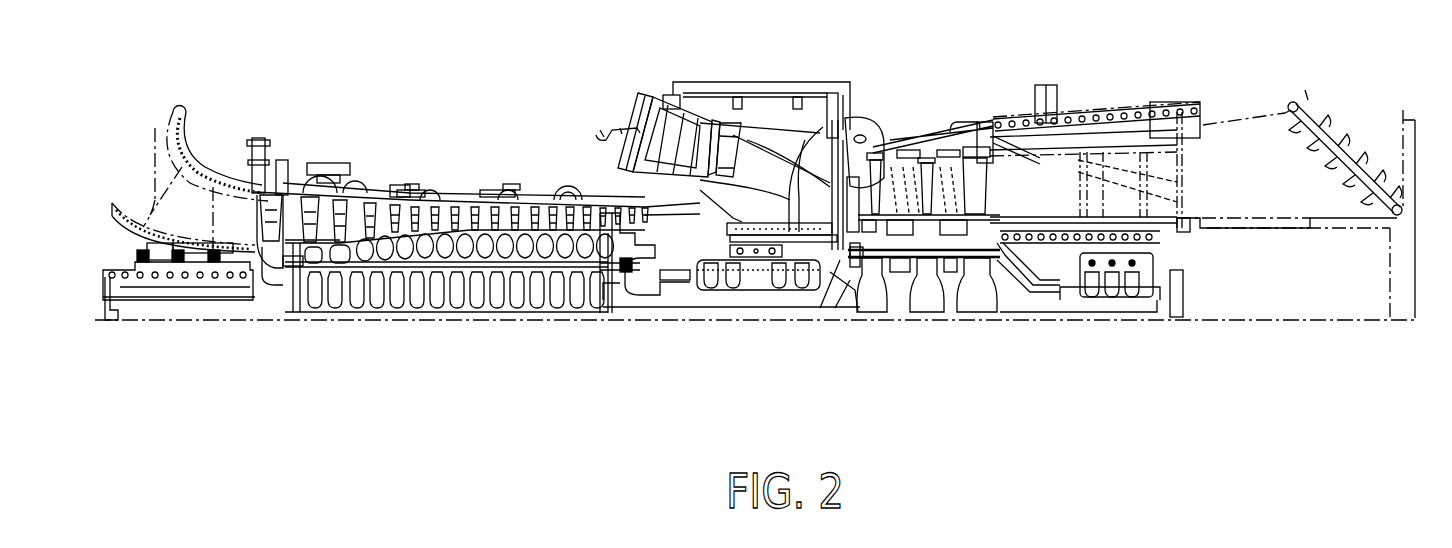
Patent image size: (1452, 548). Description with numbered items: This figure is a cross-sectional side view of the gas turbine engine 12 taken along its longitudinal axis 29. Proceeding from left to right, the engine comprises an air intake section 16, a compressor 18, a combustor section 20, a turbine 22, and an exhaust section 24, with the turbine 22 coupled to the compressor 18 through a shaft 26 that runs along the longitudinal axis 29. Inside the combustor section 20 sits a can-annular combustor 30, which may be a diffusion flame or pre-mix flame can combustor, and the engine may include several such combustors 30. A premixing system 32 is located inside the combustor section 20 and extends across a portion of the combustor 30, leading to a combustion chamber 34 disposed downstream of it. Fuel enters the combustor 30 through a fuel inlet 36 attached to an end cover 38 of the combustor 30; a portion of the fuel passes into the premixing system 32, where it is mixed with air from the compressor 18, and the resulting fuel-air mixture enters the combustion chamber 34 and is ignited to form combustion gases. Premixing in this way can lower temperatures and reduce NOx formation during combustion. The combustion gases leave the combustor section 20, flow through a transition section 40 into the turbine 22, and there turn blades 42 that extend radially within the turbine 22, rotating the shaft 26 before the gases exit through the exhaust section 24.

The gas turbine engine 12 is at (665, 345).
The air intake section 16 is at (173, 210).
The compressor 18 is at (574, 180).
The combustor section 20 is at (806, 103).
The turbine 22 is at (960, 72).
The exhaust section 24 is at (965, 72).
The shaft 26 is at (300, 268).
The longitudinal axis 29 is at (1260, 321).
The combustor 30 is at (541, 119).
The premixing system 32 is at (636, 176).
The combustion chamber 34 is at (710, 128).
The fuel inlet 36 is at (606, 140).
The end cover 38 is at (641, 103).
The transition section 40 is at (797, 198).
The blades 42 is at (877, 192).